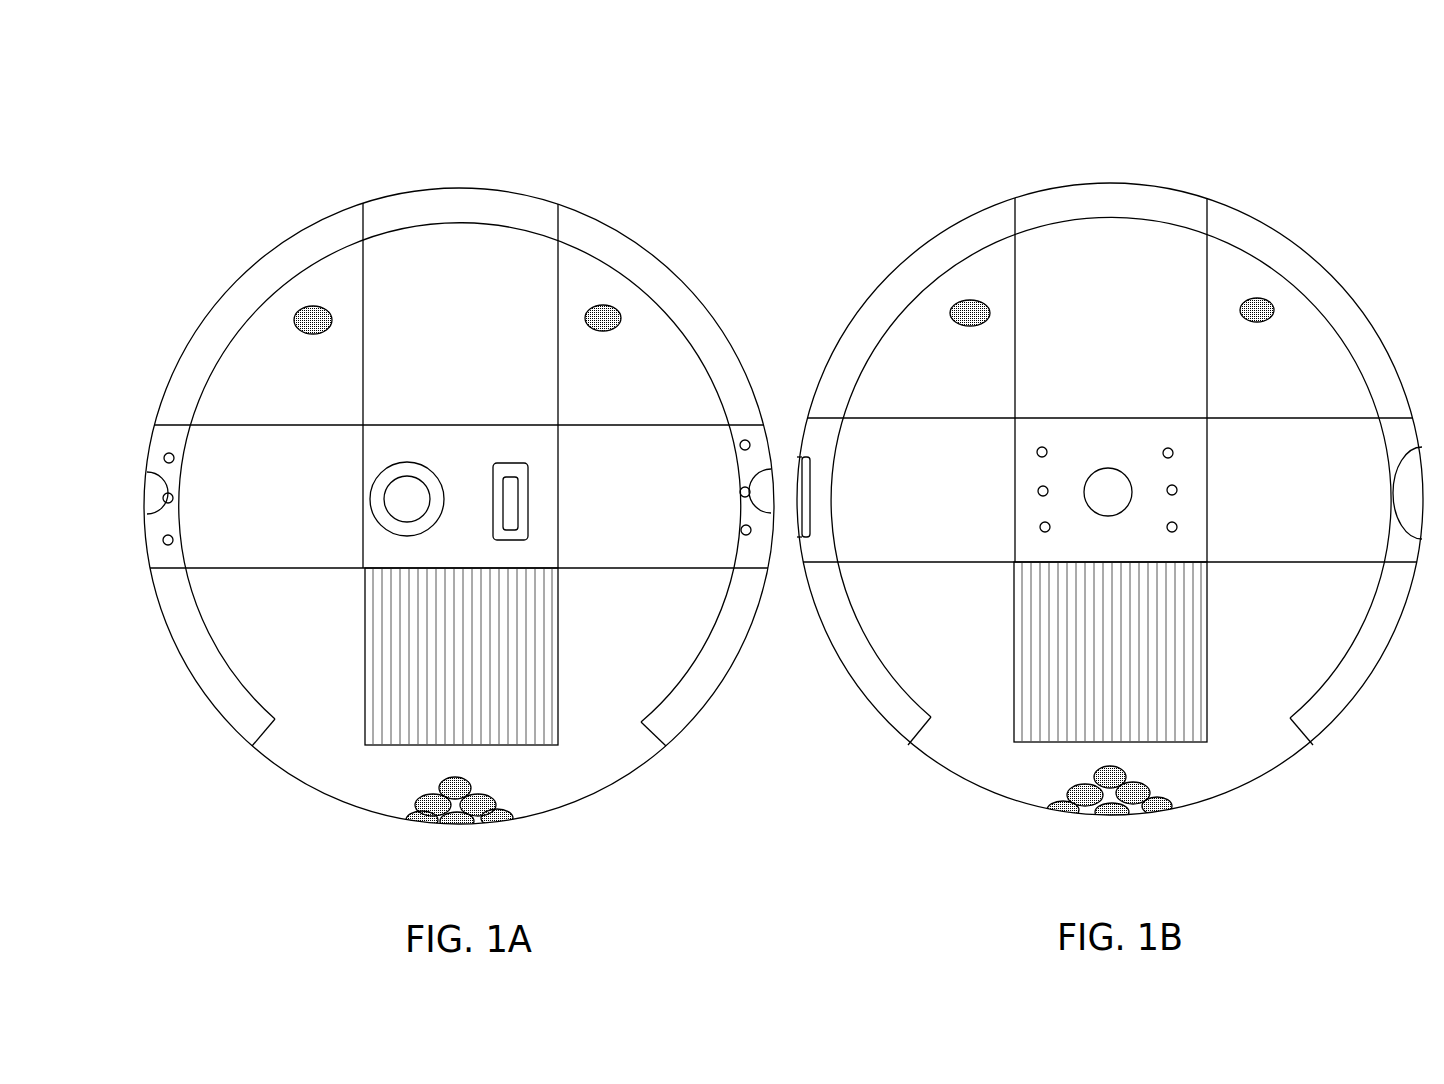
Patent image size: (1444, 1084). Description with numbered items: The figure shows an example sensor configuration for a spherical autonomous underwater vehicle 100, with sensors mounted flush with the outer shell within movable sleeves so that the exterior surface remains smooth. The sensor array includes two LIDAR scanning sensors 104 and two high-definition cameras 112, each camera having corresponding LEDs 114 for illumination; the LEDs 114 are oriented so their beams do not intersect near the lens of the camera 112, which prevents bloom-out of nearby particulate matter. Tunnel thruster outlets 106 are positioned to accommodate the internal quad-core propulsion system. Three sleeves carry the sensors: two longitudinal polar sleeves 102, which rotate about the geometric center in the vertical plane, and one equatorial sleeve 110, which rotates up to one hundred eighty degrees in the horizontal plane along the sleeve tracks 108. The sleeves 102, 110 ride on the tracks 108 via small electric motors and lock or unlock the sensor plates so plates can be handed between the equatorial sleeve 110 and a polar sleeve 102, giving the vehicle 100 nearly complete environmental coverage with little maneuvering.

In FIG. 1A, the autonomous underwater vehicle 100 is at (230, 138).
In FIG. 1B, the autonomous underwater vehicle 100 is at (806, 128).
In FIG. 1A, the polar sleeve 102 is at (440, 262).
In FIG. 1A, the LIDAR scanning sensor 104 is at (465, 463).
In FIG. 1A, the tunnel thruster outlet 106 is at (615, 305).
In FIG. 1B, the tunnel thruster outlet 106 is at (942, 308).
In FIG. 1A, the sleeve track 108 is at (680, 705).
In FIG. 1A, the equatorial sleeve 110 is at (652, 506).
In FIG. 1B, the equatorial sleeve 110 is at (895, 503).
In FIG. 1B, the high-definition camera 112 is at (1090, 462).
In FIG. 1B, the LED 114 is at (1180, 460).